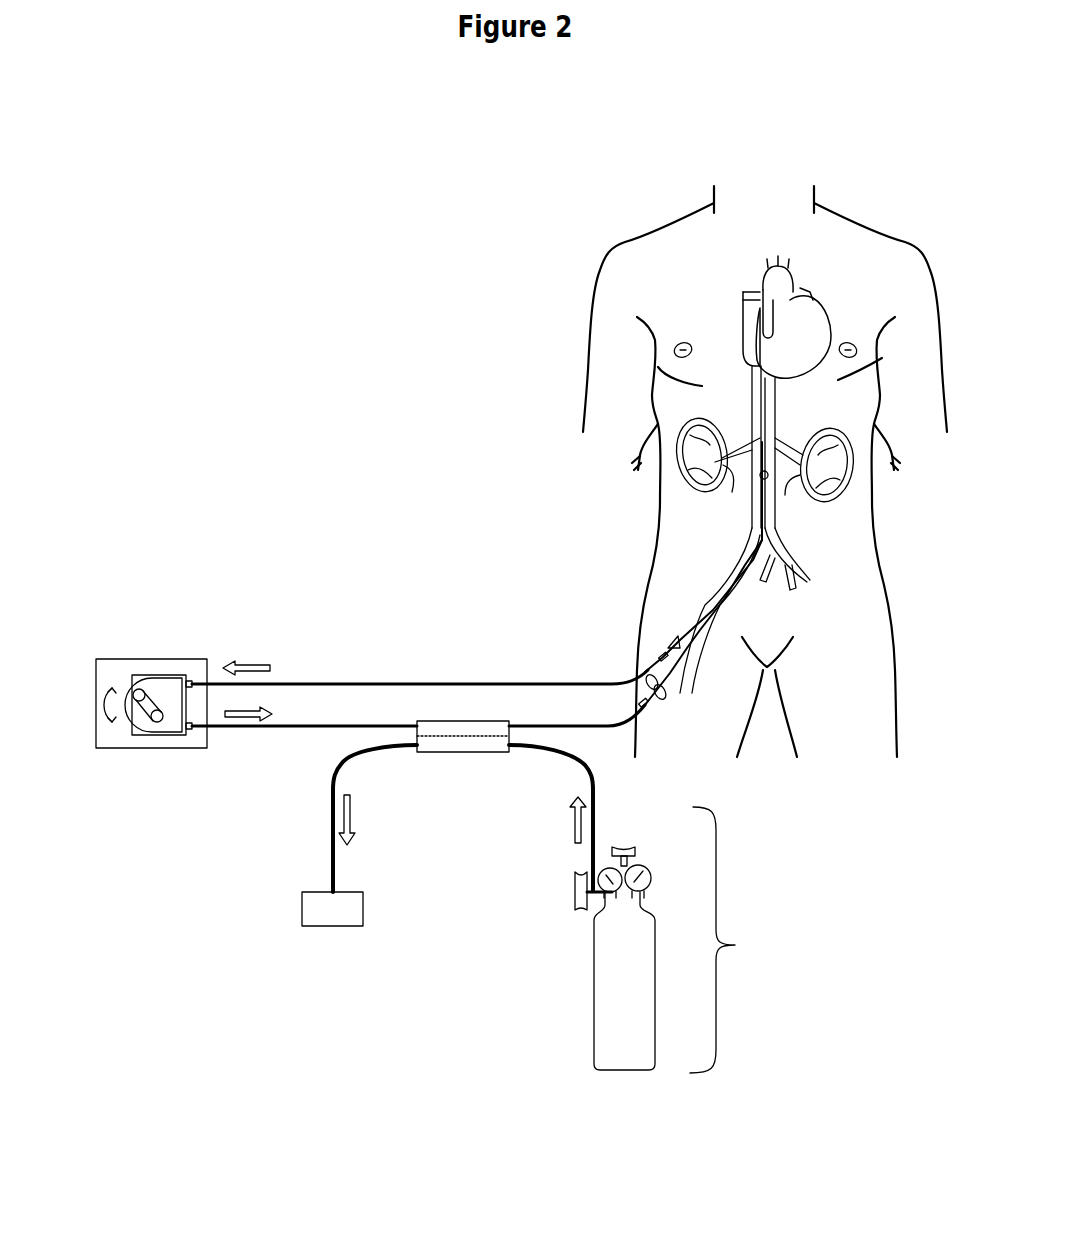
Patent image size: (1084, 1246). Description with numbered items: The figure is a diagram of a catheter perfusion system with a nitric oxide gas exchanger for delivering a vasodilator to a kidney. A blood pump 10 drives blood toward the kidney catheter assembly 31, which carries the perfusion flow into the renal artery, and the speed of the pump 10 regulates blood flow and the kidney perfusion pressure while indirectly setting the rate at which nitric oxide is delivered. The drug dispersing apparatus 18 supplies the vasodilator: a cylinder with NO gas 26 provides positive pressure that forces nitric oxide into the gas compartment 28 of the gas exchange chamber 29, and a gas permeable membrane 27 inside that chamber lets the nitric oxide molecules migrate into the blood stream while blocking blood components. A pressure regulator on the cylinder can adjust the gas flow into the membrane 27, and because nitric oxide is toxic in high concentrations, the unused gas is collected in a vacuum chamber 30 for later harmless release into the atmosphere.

The blood pump 10 is at (152, 690).
The drug dispersing apparatus 18 is at (670, 940).
The cylinder with NO gas 26 is at (594, 953).
The gas permeable membrane 27 is at (462, 736).
The gas compartment 28 is at (470, 743).
The gas exchange chamber 29 is at (450, 757).
The vacuum chamber 30 is at (333, 910).
The kidney catheter assembly 31 is at (763, 548).